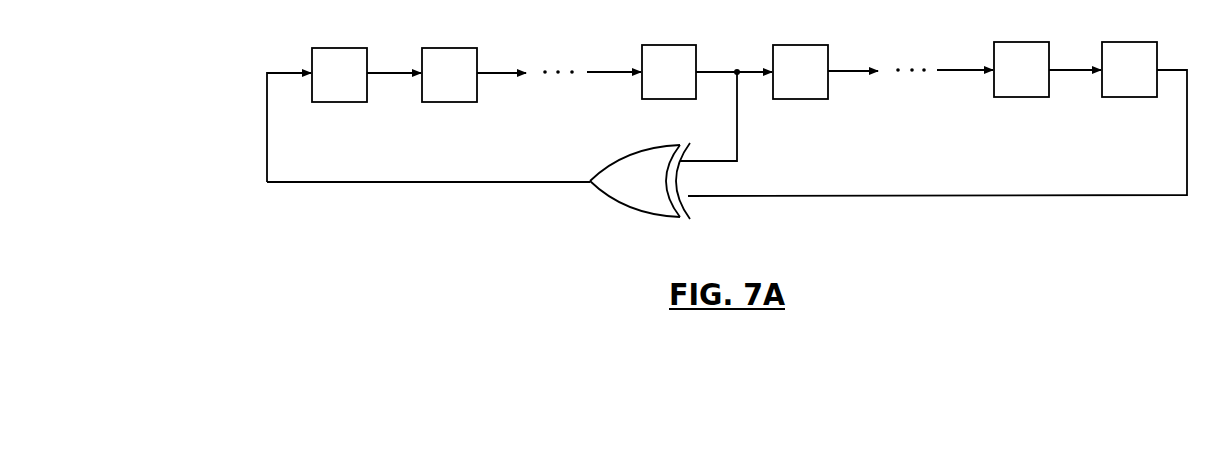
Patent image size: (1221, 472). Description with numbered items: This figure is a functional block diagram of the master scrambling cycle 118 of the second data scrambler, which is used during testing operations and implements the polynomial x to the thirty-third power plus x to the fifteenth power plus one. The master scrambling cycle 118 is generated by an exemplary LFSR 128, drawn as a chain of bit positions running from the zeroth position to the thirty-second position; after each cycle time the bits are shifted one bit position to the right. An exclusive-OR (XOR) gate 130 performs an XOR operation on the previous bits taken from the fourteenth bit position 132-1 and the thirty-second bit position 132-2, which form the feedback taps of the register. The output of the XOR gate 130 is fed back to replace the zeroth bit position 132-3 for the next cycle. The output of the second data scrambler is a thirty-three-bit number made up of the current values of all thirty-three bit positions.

The master scrambling cycle 118 is at (246, 201).
The LFSR 128 is at (769, 125).
The exclusive-OR (XOR) gate 130 is at (610, 198).
The fourteenth bit position 132-1 is at (676, 45).
The thirty-second bit position 132-2 is at (1140, 42).
The zeroth bit position 132-3 is at (347, 47).